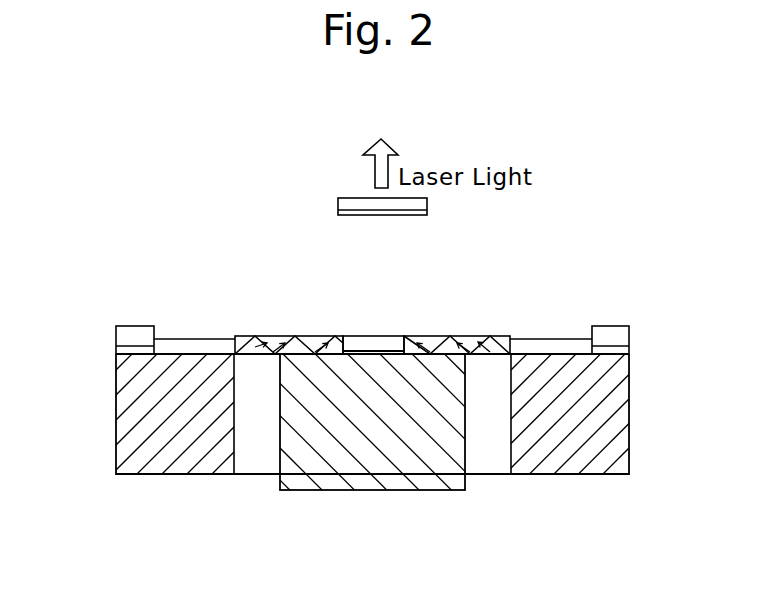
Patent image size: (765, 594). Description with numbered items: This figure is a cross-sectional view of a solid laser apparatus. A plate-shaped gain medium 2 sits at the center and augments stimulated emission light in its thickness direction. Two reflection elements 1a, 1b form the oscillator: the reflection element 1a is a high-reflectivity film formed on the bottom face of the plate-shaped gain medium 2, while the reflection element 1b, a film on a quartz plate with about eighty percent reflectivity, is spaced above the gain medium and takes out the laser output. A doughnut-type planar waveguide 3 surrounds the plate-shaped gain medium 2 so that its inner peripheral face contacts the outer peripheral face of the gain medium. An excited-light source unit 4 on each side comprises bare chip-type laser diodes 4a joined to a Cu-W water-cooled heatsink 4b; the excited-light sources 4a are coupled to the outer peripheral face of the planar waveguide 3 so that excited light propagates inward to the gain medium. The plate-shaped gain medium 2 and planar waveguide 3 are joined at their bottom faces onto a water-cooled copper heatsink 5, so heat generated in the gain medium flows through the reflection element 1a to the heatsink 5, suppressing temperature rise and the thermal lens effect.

The reflection element 1a is at (362, 354).
The reflection element 1b is at (358, 215).
The plate-shaped gain medium 2 is at (385, 343).
The planar waveguide 3 is at (472, 342).
The excited-light source unit 4 is at (103, 396).
The excited-light sources 4a is at (203, 348).
The water-cooled heatsink 4b is at (185, 452).
The heatsink 5 is at (415, 468).